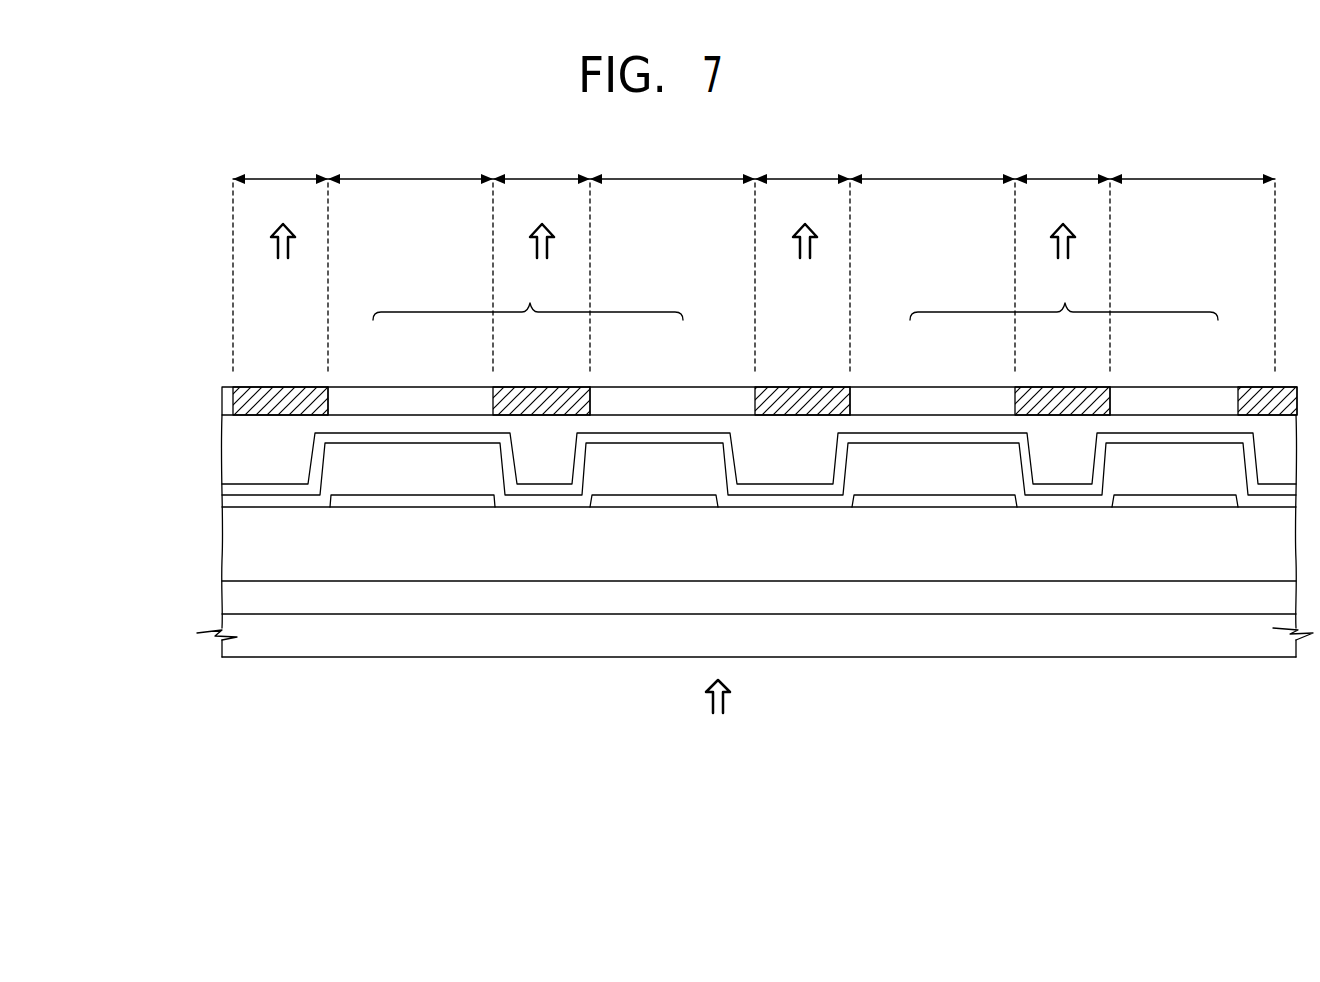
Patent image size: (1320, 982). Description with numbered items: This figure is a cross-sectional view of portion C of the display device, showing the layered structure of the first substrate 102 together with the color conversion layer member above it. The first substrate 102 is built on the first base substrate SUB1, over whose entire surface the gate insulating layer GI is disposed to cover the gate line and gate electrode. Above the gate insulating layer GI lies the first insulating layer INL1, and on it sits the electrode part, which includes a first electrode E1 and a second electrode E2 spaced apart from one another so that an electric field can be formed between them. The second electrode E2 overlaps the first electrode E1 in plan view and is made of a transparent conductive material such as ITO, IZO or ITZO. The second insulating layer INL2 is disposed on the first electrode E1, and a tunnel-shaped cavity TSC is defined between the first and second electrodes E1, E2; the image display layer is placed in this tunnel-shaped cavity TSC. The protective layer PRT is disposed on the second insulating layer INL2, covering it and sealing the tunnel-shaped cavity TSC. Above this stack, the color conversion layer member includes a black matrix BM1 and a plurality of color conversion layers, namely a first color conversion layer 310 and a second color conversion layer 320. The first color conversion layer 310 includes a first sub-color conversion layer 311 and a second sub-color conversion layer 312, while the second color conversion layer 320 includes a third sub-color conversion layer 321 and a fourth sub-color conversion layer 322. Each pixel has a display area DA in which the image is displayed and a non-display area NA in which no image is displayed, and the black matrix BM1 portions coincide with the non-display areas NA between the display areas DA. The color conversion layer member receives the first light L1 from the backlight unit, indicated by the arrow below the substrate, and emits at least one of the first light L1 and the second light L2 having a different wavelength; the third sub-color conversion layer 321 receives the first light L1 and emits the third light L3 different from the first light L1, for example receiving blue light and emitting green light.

The black matrix BM1 is at (221, 400).
The protective layer PRT is at (221, 452).
The second electrode E2 is at (221, 489).
The second insulating layer INL2 is at (221, 505).
The first insulating layer INL1 is at (236, 545).
The gate insulating layer GI is at (228, 598).
The first base substrate SUB1 is at (221, 648).
The first substrate 102 is at (124, 540).
The first electrode E1 is at (368, 500).
The tunnel-shaped cavity TSC is at (442, 461).
The first color conversion layer 310 is at (528, 298).
The first sub-color conversion layer 311 is at (380, 387).
The second sub-color conversion layer 312 is at (650, 387).
The second color conversion layer 320 is at (1064, 298).
The third sub-color conversion layer 321 is at (917, 387).
The fourth sub-color conversion layer 322 is at (1183, 387).
The portion C is at (1280, 161).
The non-display area NA is at (666, 165).
The display area DA is at (803, 165).
The first light L1 is at (802, 468).
The second light L2 is at (283, 225).
The third light L3 is at (805, 225).